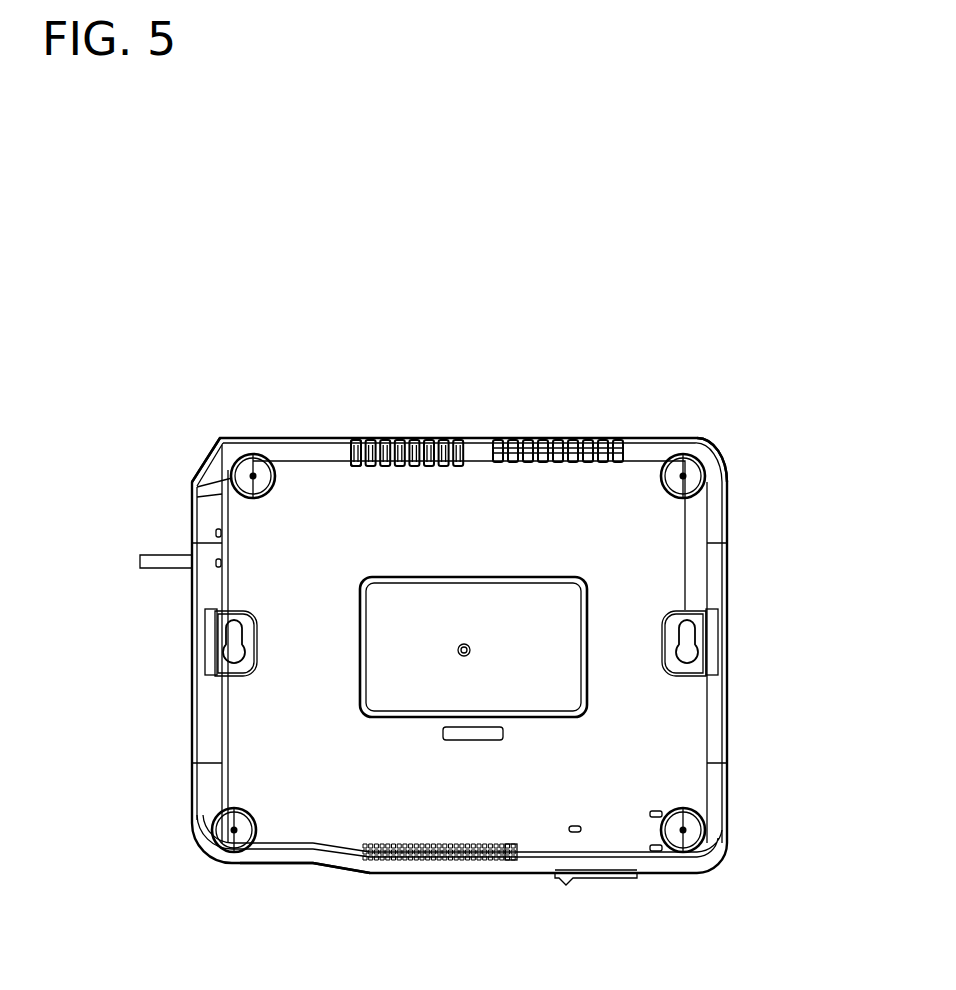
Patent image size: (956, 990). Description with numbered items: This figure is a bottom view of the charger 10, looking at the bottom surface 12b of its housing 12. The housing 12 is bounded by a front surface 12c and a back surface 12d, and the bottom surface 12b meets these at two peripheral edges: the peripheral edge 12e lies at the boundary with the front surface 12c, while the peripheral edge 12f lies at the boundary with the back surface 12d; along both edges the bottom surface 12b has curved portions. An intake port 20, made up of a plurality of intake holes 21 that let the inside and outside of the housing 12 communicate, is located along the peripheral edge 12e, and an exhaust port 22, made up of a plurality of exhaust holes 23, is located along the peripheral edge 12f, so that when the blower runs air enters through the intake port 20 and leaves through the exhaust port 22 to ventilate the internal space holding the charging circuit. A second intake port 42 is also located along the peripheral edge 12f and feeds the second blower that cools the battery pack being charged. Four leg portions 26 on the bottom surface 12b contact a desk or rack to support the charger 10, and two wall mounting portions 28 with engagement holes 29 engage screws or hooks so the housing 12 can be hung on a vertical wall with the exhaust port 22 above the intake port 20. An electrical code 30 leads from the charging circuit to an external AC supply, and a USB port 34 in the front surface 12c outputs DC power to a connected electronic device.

The charger 10 is at (742, 350).
The housing 12 is at (728, 512).
The bottom surface 12b is at (668, 577).
The front surface 12c is at (273, 865).
The back surface 12d is at (232, 440).
The peripheral edge 12e is at (333, 860).
The peripheral edge 12f is at (655, 449).
The intake port 20 is at (515, 878).
The intake holes 21 is at (518, 854).
The exhaust port 22 is at (352, 424).
The exhaust holes 23 is at (352, 455).
The leg portions 26 is at (232, 460).
The wall mounting portions 28 is at (222, 620).
The engagement holes 29 is at (232, 658).
The electrical code 30 is at (168, 558).
The USB port 34 is at (608, 880).
The second intake port 42 is at (492, 424).